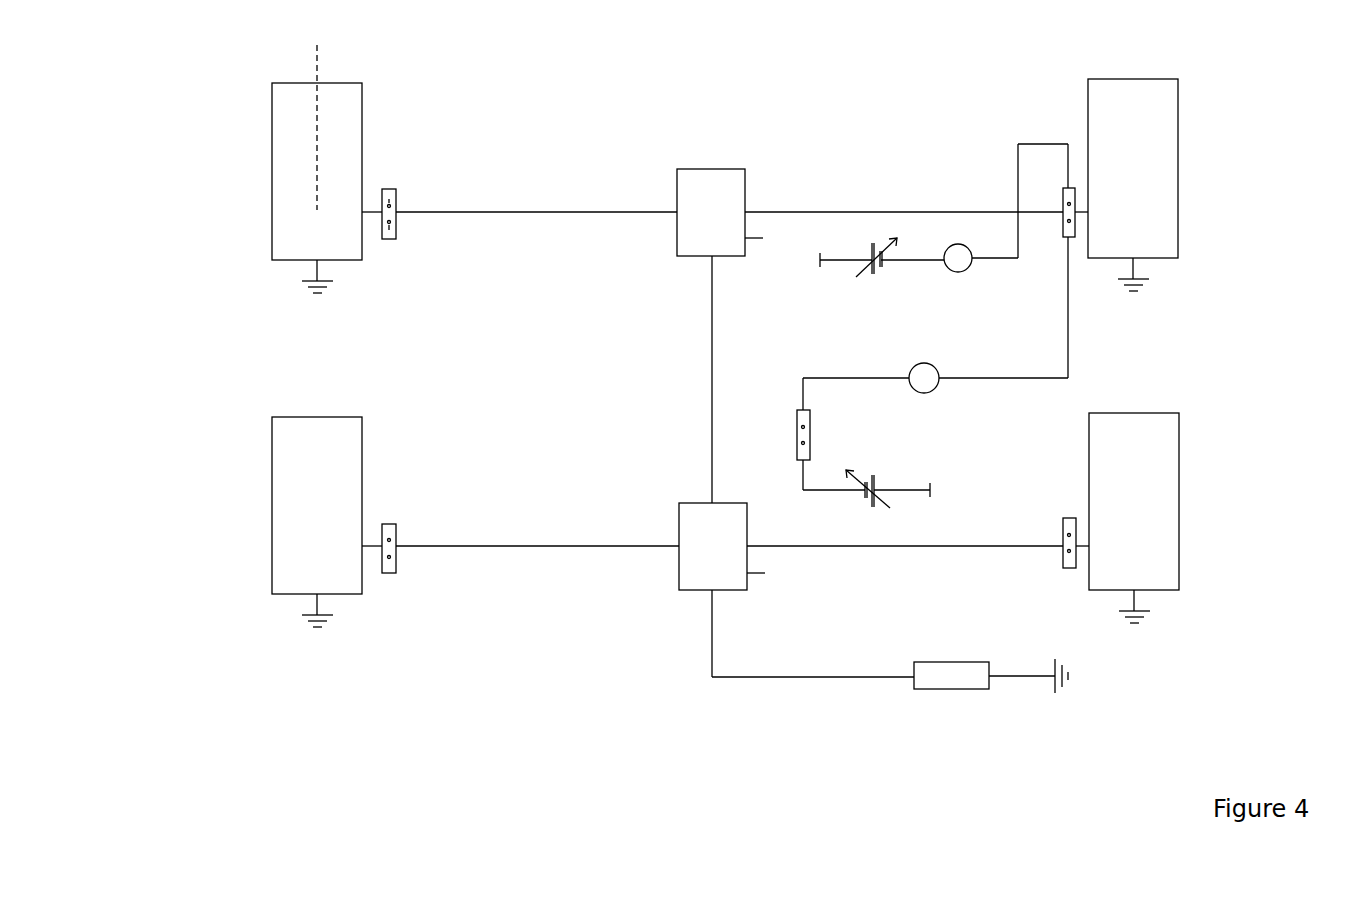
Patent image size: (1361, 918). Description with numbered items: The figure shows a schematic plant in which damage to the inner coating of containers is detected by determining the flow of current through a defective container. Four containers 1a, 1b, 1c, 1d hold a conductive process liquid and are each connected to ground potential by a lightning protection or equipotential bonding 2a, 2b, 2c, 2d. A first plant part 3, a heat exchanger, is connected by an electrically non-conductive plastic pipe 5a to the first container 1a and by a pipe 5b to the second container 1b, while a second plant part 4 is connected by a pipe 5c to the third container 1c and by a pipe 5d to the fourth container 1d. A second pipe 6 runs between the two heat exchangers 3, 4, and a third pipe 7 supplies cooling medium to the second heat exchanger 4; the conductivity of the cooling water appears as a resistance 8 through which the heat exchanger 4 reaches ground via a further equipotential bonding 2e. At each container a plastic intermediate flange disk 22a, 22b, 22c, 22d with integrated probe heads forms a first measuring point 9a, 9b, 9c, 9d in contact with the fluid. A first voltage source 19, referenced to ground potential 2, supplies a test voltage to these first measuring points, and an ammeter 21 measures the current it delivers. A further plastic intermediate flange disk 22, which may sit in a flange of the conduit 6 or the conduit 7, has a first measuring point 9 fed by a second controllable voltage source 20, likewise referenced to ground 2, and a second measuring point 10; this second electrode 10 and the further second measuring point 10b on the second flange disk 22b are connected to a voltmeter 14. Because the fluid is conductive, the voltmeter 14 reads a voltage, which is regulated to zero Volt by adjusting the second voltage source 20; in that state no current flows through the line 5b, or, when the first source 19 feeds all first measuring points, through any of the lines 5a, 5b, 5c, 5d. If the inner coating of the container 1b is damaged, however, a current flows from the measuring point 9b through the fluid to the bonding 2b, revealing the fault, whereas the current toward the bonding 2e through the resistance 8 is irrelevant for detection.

The first container 1a is at (284, 170).
The second container 1b is at (1165, 133).
The third container 1c is at (285, 506).
The fourth container 1d is at (1165, 465).
The ground potential 2 is at (832, 262).
The equipotential bonding 2a is at (322, 279).
The equipotential bonding 2b is at (1139, 268).
The equipotential bonding 2c is at (322, 613).
The equipotential bonding 2d is at (1140, 598).
The equipotential bonding 2e is at (1030, 678).
The first plant part 3 is at (733, 186).
The second plant part 4 is at (688, 531).
The pipe 5a is at (512, 210).
The pipe 5b is at (858, 210).
The pipe 5c is at (513, 545).
The pipe 5d is at (858, 546).
The second pipe 6 is at (710, 392).
The third pipe 7 is at (795, 676).
The resistance 8 is at (948, 667).
The first measuring point 9 is at (797, 450).
The first measuring point 9a is at (393, 191).
The first measuring point 9b is at (1064, 196).
The first measuring point 9c is at (393, 526).
The first measuring point 9d is at (1063, 527).
The second measuring point 10 is at (797, 418).
The further second measuring point 10b is at (1073, 238).
The voltmeter 14 is at (937, 389).
The first voltage source 19 is at (870, 256).
The second controllable voltage source 20 is at (877, 489).
The ammeter 21 is at (958, 273).
The plastic intermediate flange disk 22 is at (809, 440).
The plastic intermediate flange disk 22a is at (397, 232).
The second plastic intermediate flange disk 22b is at (1062, 228).
The plastic intermediate flange disk 22c is at (398, 568).
The plastic intermediate flange disk 22d is at (1062, 553).